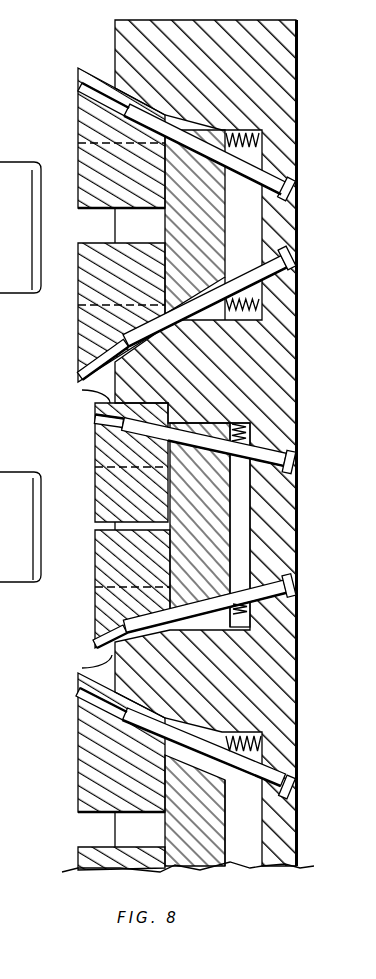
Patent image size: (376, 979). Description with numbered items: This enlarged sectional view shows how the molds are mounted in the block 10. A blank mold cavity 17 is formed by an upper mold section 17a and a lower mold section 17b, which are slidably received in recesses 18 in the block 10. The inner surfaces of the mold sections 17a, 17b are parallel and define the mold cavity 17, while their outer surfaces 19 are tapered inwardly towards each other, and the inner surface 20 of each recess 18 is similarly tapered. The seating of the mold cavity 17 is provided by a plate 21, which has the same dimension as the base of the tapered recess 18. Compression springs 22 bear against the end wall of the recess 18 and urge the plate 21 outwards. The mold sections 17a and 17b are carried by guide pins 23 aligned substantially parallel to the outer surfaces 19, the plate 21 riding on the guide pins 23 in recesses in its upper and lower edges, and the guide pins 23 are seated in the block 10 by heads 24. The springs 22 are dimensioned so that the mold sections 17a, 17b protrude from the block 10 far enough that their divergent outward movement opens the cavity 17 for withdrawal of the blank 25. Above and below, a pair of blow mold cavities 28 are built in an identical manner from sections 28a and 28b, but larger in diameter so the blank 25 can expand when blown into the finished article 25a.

The block 10 is at (108, 50).
The blank mold cavity 17 is at (175, 525).
The upper mold section 17a is at (96, 432).
The lower mold section 17b is at (108, 606).
The recess 18 is at (239, 517).
The outer surface 19 is at (82, 389).
The inner surface 20 is at (158, 418).
The plate 21 is at (213, 553).
The compression spring 22 is at (248, 436).
The guide pin 23 is at (263, 456).
The head 24 is at (295, 459).
The blank 25 is at (38, 479).
The finished article 25a is at (6, 235).
The blow mold cavity 28 is at (148, 468).
The blow mold section 28a is at (97, 165).
The blow mold section 28b is at (86, 318).